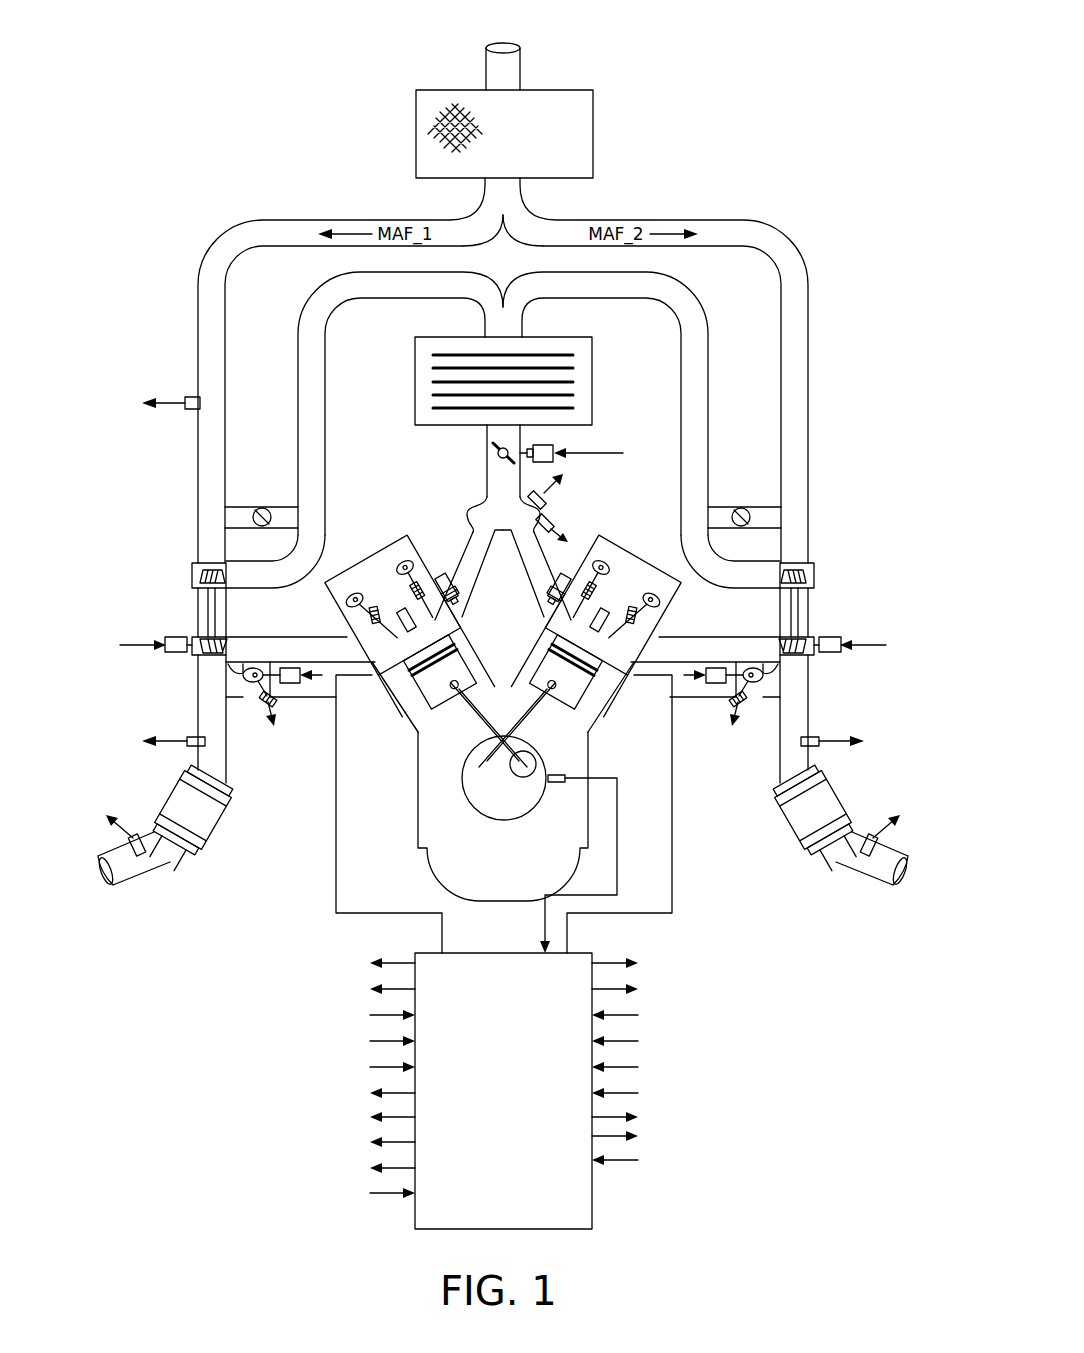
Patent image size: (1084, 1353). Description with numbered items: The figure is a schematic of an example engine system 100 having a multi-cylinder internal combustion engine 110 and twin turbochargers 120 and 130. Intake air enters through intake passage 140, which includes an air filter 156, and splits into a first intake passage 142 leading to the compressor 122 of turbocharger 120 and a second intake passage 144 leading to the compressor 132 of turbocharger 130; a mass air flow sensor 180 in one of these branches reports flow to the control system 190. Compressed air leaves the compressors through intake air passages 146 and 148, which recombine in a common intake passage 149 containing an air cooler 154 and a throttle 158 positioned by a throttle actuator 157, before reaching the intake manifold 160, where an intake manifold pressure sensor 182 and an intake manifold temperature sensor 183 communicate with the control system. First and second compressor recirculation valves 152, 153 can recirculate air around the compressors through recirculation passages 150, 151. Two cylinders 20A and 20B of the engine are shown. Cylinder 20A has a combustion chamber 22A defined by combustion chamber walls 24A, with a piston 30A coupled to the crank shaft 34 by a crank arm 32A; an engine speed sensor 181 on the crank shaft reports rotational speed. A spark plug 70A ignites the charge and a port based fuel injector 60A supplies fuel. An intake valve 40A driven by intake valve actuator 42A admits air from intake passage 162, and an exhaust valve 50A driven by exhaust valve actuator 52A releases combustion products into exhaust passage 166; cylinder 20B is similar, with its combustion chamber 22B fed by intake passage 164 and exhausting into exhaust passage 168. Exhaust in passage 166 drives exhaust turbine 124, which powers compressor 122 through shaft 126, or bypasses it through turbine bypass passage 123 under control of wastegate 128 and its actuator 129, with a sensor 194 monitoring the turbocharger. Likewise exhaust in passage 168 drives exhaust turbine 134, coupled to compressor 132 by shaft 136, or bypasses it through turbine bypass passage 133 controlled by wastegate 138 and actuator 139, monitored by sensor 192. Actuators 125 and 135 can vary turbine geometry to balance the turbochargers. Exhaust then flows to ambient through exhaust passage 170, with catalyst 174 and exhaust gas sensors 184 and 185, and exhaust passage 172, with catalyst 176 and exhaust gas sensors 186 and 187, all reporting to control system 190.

The engine system 100 is at (786, 32).
The internal combustion engine 110 is at (432, 860).
The turbocharger 120 is at (187, 608).
The compressor 122 is at (200, 576).
The turbine bypass passage 123 is at (242, 688).
The exhaust turbine 124 is at (195, 650).
The actuator 125 is at (172, 635).
The shaft 126 is at (215, 620).
The wastegate 128 is at (265, 695).
The actuator 129 is at (297, 686).
The turbocharger 130 is at (817, 608).
The compressor 132 is at (806, 576).
The turbine bypass passage 133 is at (762, 688).
The exhaust turbine 134 is at (811, 650).
The actuator 135 is at (833, 635).
The shaft 136 is at (791, 620).
The wastegate 138 is at (741, 695).
The actuator 139 is at (711, 686).
The intake passage 140 is at (514, 80).
The intake passage 142 is at (312, 222).
The intake passage 144 is at (722, 240).
The intake air passage 146 is at (322, 388).
The intake air passage 148 is at (700, 388).
The common intake passage 149 is at (495, 475).
The recirculation passage 150 is at (266, 530).
The recirculation passage 151 is at (742, 530).
The first compressor recirculation valve 152 is at (266, 506).
The second compressor recirculation valve 153 is at (744, 506).
The air cooler 154 is at (577, 392).
The air filter 156 is at (575, 138).
The throttle actuator 157 is at (553, 450).
The throttle 158 is at (490, 447).
The intake manifold 160 is at (470, 516).
The intake passage 162 is at (474, 568).
The intake passage 164 is at (532, 556).
The exhaust passage 166 is at (320, 640).
The exhaust passage 168 is at (688, 640).
The exhaust passage 170 is at (226, 762).
The exhaust passage 172 is at (780, 762).
The catalyst 174 is at (188, 806).
The catalyst 176 is at (822, 806).
The mass air flow sensor 180 is at (192, 396).
The engine speed sensor 181 is at (553, 785).
The intake manifold pressure sensor 182 is at (550, 505).
The intake manifold temperature sensor 183 is at (558, 525).
The exhaust gas sensor 184 is at (195, 736).
The exhaust gas sensor 185 is at (128, 845).
The exhaust gas sensor 186 is at (810, 736).
The exhaust gas sensor 187 is at (878, 845).
The control system 190 is at (495, 1090).
The sensor 192 is at (719, 728).
The sensor 194 is at (280, 726).
The cylinder 20A is at (427, 665).
The cylinder 20B is at (580, 647).
The combustion chamber 22A is at (412, 681).
The combustion chamber 22B is at (598, 680).
The combustion chamber walls 24A is at (433, 659).
The piston 30A is at (447, 732).
The crank arm 32A is at (476, 730).
The crank shaft 34 is at (500, 800).
The intake valve 40A is at (442, 564).
The intake valve actuator 42A is at (397, 538).
The exhaust valve 50A is at (402, 676).
The exhaust valve actuator 52A is at (352, 582).
The fuel injector 60A is at (472, 625).
The spark plug 70A is at (399, 608).